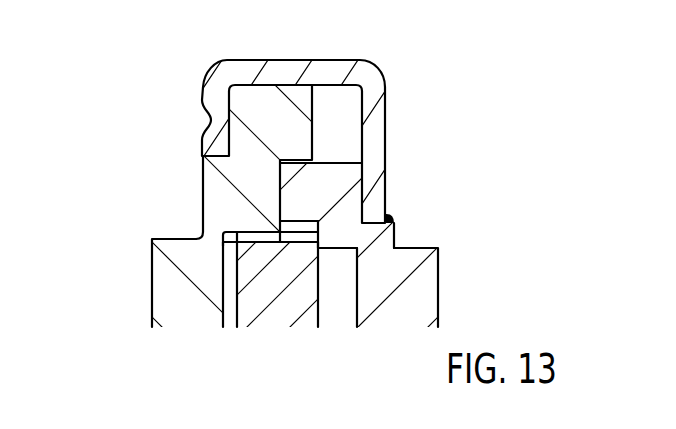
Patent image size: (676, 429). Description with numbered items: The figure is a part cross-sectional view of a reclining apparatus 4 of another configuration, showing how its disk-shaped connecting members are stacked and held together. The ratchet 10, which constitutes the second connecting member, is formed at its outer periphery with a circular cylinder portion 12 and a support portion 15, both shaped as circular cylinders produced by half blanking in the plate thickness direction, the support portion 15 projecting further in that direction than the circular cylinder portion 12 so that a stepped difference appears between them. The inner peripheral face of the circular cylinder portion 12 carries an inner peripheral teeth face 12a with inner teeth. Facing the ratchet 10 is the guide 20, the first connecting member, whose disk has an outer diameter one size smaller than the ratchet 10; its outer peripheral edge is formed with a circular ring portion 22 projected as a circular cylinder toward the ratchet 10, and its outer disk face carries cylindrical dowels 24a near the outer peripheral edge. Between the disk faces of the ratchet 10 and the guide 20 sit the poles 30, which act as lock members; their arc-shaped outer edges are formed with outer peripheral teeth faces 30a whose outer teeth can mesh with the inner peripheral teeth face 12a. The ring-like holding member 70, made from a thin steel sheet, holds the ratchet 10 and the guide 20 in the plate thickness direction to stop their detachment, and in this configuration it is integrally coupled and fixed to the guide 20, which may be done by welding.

The reclining apparatus 4 is at (385, 52).
The holding member 70 is at (386, 107).
The support portion 15 is at (268, 110).
The circular cylinder portion 12 is at (240, 197).
The inner peripheral teeth face 12a is at (257, 236).
The outer peripheral teeth face 30a is at (277, 237).
The ratchet 10 is at (168, 300).
The pole 30 is at (297, 287).
The circular ring portion 22 is at (315, 193).
The guide 20 is at (352, 219).
The dowel 24a is at (403, 312).